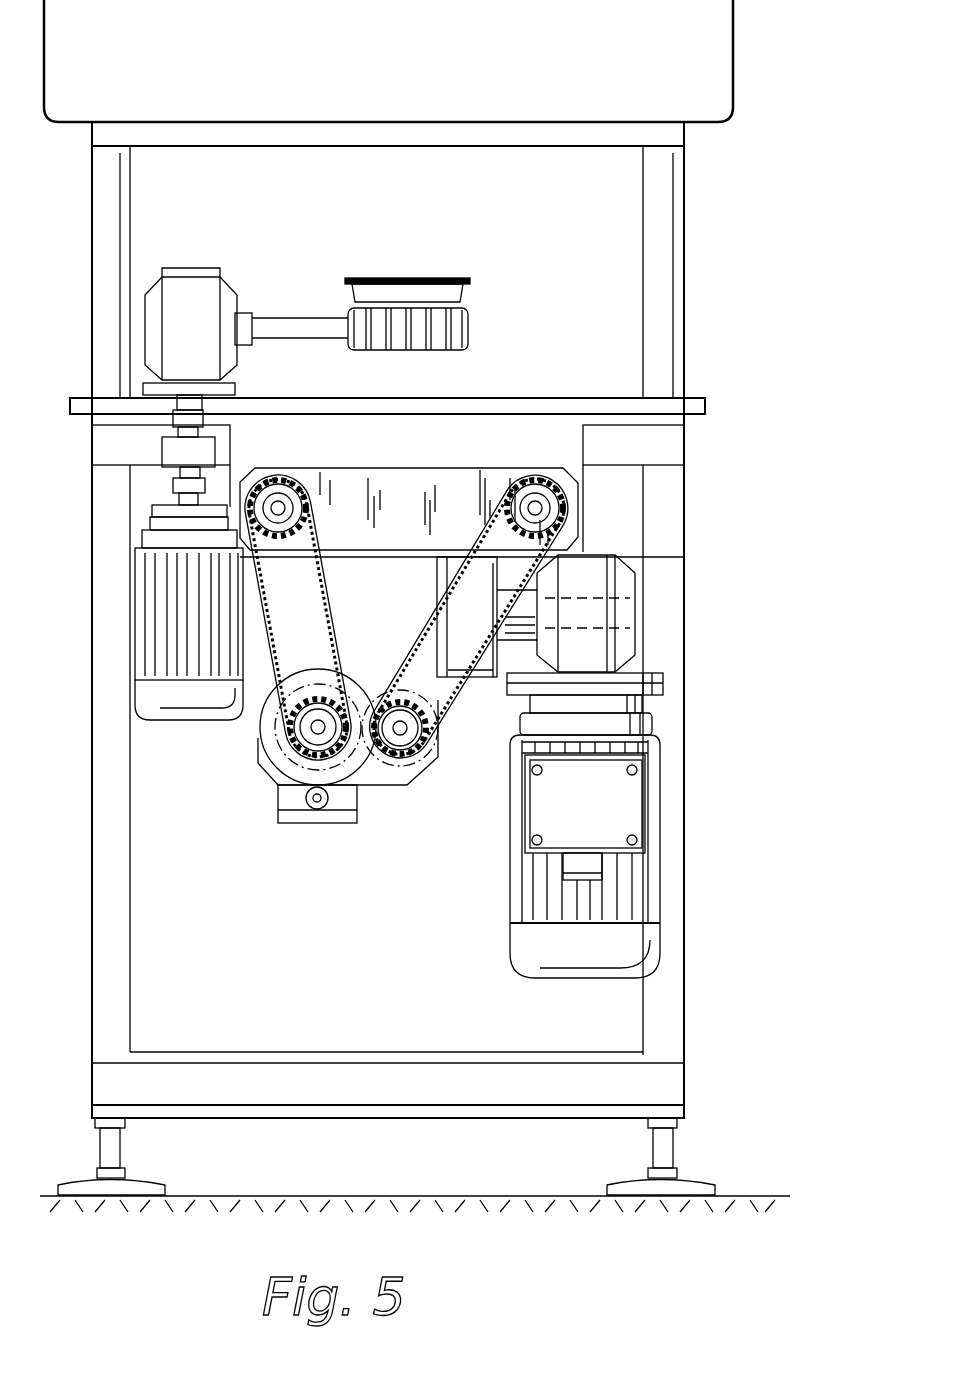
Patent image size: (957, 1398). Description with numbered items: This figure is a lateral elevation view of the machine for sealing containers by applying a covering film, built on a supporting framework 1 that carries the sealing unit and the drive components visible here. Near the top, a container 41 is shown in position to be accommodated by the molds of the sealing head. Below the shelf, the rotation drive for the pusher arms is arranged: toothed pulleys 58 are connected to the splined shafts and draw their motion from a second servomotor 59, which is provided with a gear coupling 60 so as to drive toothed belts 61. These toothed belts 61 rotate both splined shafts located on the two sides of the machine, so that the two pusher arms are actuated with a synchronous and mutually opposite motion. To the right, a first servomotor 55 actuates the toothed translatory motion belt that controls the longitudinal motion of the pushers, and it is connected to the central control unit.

The supporting framework 1 is at (415, 606).
The container 41 is at (430, 279).
The first servomotor 55 is at (650, 873).
The toothed pulleys 58 is at (283, 478).
The second servomotor 59 is at (275, 758).
The gear coupling 60 is at (365, 680).
The toothed belts 61 is at (270, 660).